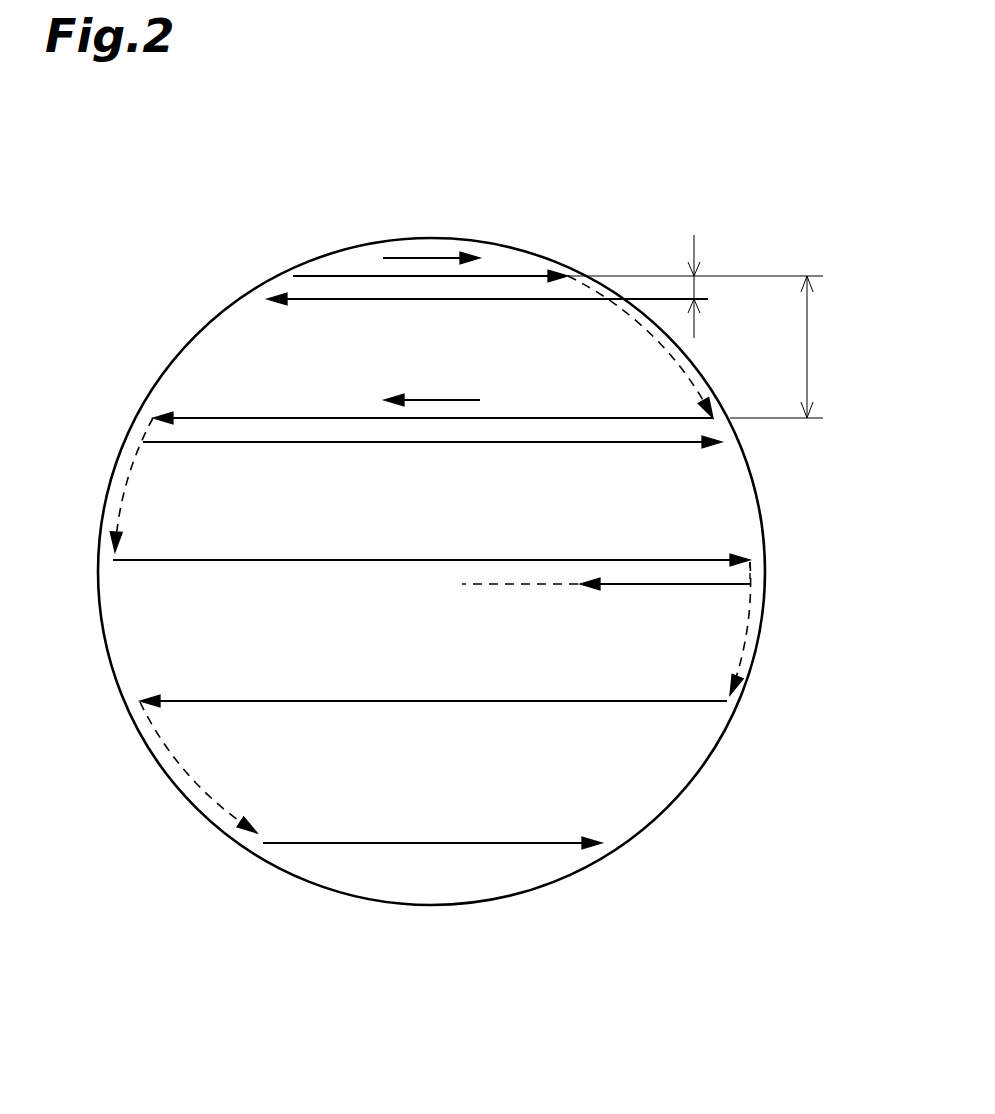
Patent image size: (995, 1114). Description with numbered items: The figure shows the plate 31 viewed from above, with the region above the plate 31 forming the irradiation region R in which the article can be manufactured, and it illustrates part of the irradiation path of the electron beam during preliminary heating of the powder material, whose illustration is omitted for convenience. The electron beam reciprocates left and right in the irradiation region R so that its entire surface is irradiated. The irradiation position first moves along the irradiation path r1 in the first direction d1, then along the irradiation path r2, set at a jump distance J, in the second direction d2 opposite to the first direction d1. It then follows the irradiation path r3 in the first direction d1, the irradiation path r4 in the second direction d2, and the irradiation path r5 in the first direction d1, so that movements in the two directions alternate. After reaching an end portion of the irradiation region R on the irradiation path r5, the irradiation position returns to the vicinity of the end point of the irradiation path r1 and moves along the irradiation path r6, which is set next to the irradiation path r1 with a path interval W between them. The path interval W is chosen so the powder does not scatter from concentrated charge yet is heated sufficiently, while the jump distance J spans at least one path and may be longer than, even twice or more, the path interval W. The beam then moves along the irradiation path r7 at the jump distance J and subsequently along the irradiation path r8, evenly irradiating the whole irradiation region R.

The plate 31 is at (687, 792).
The irradiation region R is at (687, 733).
The irradiation path (first irradiation path) r1 is at (343, 276).
The irradiation path (second irradiation path) r2 is at (590, 418).
The irradiation path r3 is at (537, 560).
The irradiation path r4 is at (576, 701).
The irradiation path r5 is at (312, 843).
The irradiation path (third irradiation path) r6 is at (320, 299).
The irradiation path r7 is at (229, 442).
The irradiation path r8 is at (692, 585).
The first direction d1 is at (433, 258).
The second direction d2 is at (433, 400).
The path interval W is at (694, 288).
The jump distance J is at (807, 336).